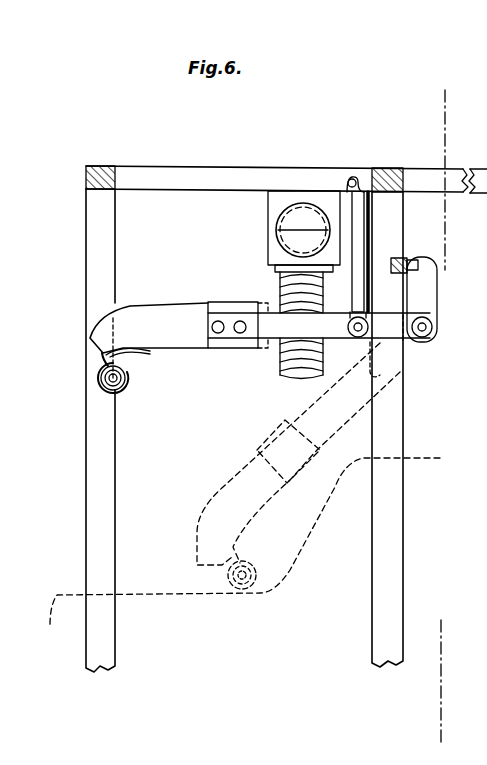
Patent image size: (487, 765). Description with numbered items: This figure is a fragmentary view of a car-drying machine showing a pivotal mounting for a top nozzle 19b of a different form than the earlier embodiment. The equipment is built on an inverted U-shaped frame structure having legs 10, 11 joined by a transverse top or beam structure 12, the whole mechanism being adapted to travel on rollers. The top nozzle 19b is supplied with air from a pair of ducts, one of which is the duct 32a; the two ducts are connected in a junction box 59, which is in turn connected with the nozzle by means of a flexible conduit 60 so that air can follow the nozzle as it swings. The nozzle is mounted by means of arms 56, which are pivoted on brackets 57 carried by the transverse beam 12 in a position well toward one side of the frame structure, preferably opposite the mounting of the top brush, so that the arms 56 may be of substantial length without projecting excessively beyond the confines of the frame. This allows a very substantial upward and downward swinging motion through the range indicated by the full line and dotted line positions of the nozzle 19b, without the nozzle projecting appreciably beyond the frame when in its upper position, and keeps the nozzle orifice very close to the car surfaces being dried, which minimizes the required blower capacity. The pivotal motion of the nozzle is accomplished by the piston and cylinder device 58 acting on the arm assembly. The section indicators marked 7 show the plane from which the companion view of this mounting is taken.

The transverse top or beam structure 12 is at (200, 166).
The leg 11 is at (83, 437).
The leg 10 is at (483, 526).
The junction box 59 is at (268, 211).
The duct 32a is at (291, 196).
The piston and cylinder device 58 is at (346, 205).
The bracket 57 is at (427, 300).
The arm 56 is at (337, 343).
The top nozzle 19b is at (174, 304).
The flexible conduit 60 is at (285, 362).
The section line 7 is at (407, 122).